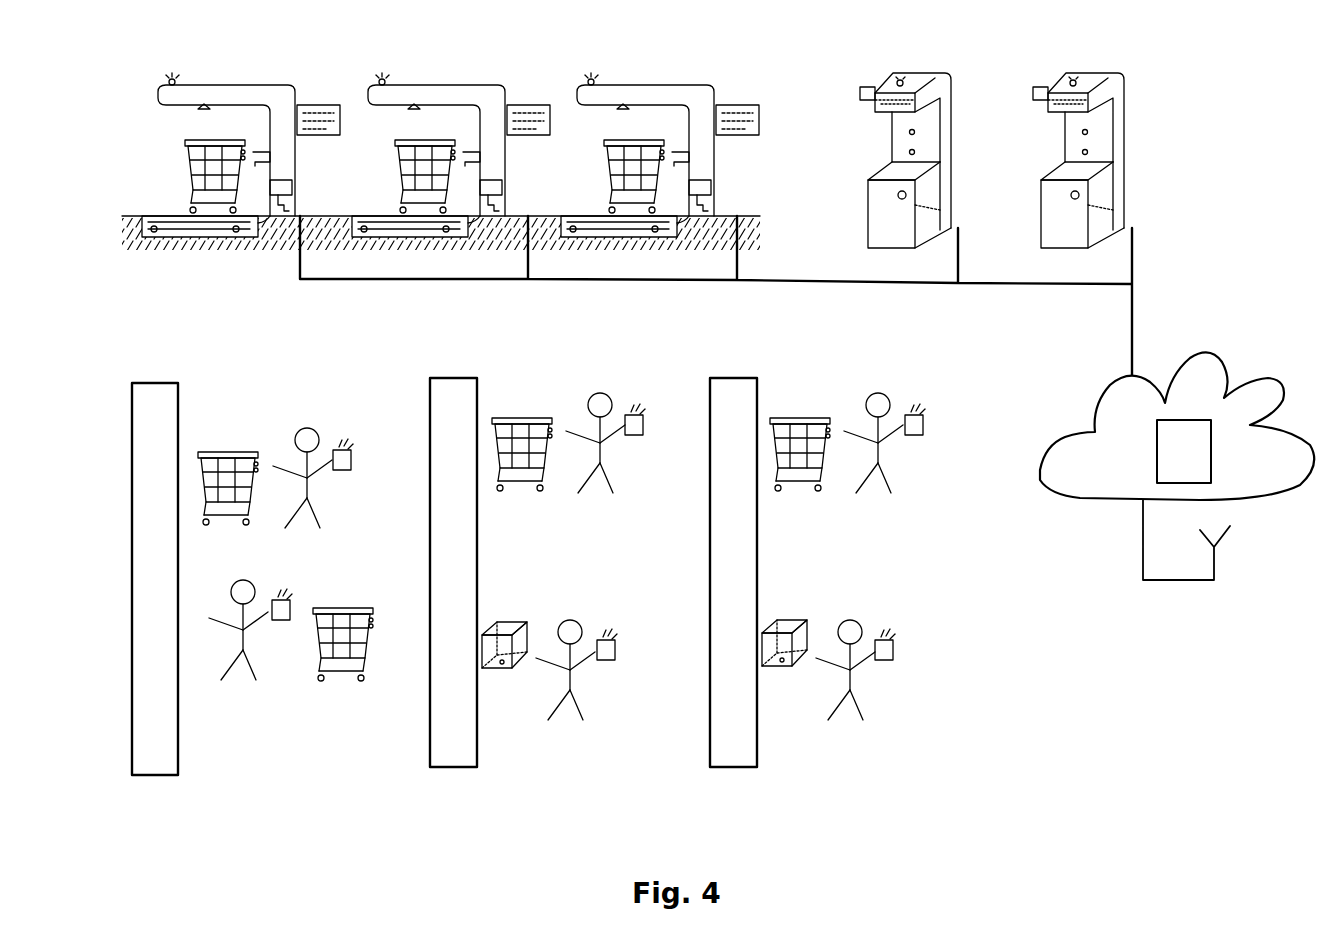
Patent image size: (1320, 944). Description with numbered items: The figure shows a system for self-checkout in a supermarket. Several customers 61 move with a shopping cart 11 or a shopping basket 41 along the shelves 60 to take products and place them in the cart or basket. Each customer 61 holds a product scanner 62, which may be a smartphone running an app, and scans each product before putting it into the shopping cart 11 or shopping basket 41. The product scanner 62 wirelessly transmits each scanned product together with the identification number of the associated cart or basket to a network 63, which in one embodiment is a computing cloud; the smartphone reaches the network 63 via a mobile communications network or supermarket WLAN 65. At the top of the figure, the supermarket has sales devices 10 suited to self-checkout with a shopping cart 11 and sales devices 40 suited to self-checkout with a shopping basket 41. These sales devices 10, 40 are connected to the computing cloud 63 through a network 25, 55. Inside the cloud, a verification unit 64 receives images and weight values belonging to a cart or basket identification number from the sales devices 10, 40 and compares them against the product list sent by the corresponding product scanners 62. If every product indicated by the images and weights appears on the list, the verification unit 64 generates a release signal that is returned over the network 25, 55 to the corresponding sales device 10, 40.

The sales device 10 is at (441, 122).
The shopping cart 11 is at (220, 450).
The network 25 is at (716, 295).
The network 55 is at (990, 290).
The sales device 40 is at (1012, 124).
The shopping basket 41 is at (512, 620).
The shelf 60 is at (178, 780).
The customer 61 is at (316, 418).
The product scanner 62 is at (355, 455).
The network 63 is at (1212, 348).
The verification unit 64 is at (1150, 451).
The mobile communications network 65 is at (1225, 548).